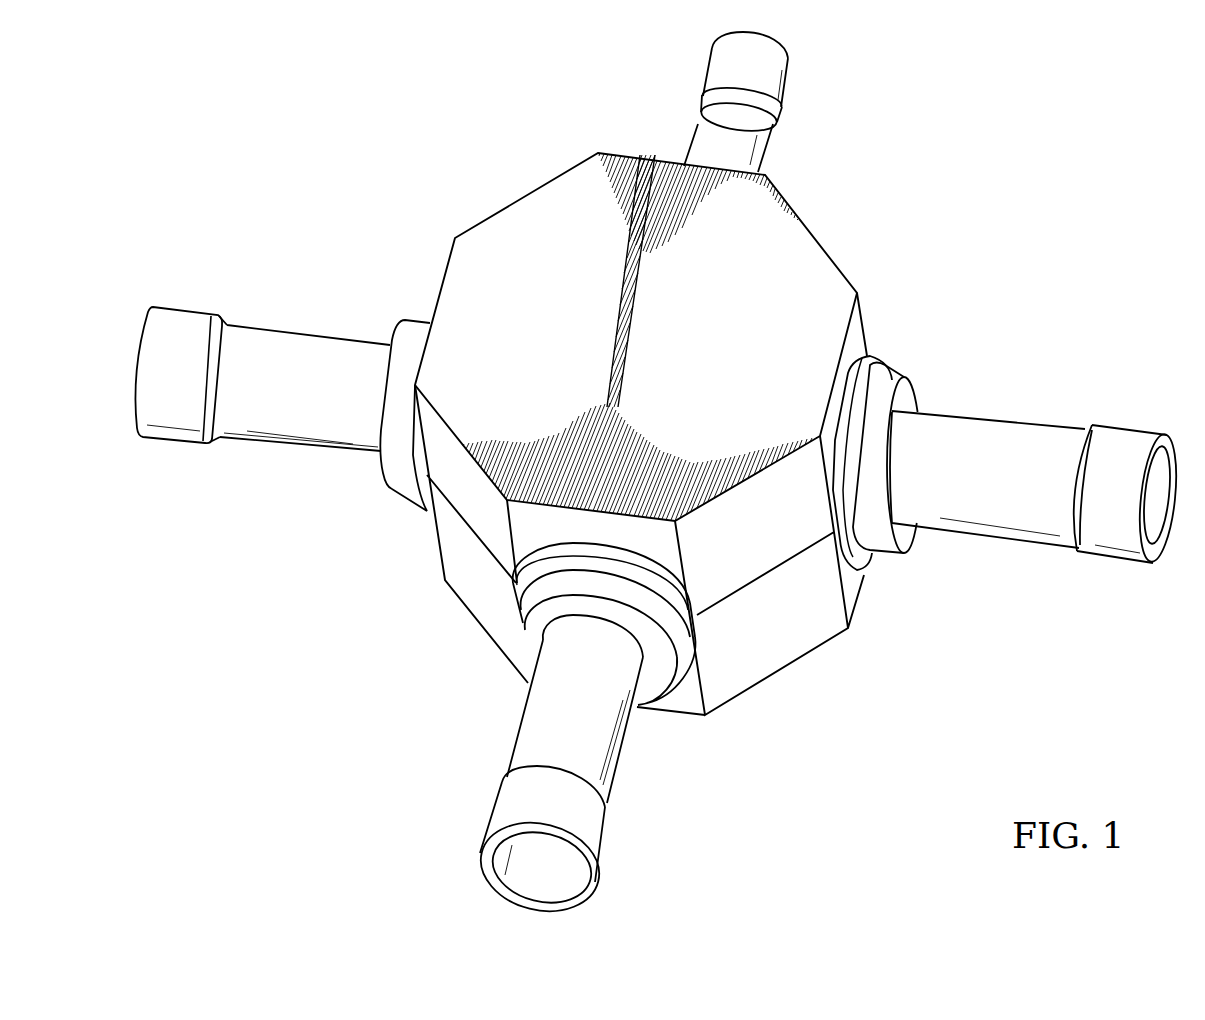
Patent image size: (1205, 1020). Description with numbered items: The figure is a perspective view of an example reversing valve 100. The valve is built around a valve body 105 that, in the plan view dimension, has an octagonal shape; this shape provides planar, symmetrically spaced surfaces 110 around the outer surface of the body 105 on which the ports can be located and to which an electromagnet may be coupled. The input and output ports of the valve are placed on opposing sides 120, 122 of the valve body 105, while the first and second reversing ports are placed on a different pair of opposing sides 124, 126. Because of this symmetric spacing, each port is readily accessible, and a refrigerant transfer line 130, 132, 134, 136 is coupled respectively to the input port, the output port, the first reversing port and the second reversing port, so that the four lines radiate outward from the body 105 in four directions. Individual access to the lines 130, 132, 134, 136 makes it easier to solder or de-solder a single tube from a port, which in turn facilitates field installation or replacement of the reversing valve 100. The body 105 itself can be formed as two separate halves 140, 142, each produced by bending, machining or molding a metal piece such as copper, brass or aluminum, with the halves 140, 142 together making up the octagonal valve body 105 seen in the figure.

The reversing valve 100 is at (353, 106).
The valve body 105 is at (574, 192).
The outer surface 110 is at (821, 232).
The side of the valve body 120 is at (791, 159).
The side of the valve body 122 is at (489, 696).
The side of the valve body 124 is at (967, 393).
The side of the valve body 126 is at (328, 299).
The refrigerant transfer line 130 is at (724, 75).
The refrigerant transfer line 132 is at (498, 820).
The refrigerant transfer line 134 is at (190, 318).
The refrigerant transfer line 136 is at (1118, 447).
The valve body half 140 is at (467, 537).
The valve body half 142 is at (866, 639).